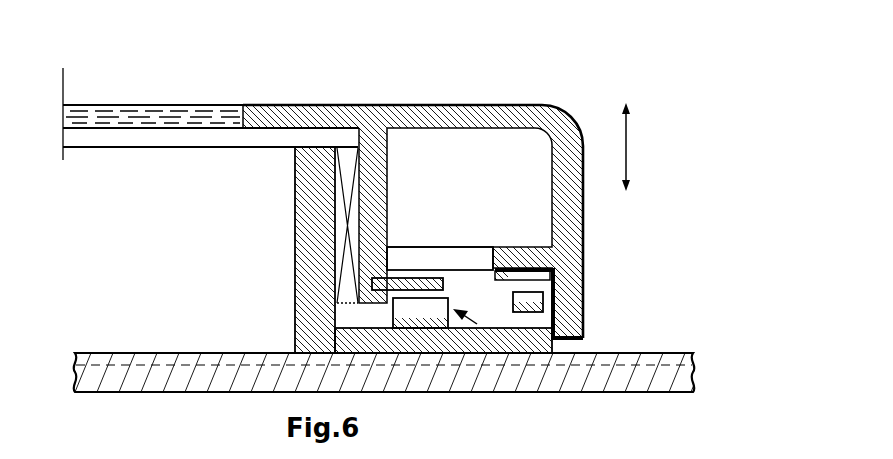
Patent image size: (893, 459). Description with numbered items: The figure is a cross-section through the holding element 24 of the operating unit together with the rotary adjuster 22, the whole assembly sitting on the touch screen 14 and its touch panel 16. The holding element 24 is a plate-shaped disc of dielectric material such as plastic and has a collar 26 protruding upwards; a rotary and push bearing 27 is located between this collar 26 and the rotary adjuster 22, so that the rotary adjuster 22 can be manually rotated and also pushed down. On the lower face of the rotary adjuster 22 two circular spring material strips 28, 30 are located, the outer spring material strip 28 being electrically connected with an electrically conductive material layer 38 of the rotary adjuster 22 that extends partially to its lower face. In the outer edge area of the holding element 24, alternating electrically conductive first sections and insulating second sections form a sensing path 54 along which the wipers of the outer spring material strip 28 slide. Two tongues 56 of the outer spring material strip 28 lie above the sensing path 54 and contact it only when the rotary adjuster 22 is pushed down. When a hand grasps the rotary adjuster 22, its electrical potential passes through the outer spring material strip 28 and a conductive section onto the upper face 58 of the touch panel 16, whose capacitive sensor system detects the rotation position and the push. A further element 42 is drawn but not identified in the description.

The touch screen 14 is at (632, 377).
The touch panel 16 is at (157, 352).
The rotary adjuster 22 is at (525, 104).
The holding element 24 is at (388, 352).
The collar 26 is at (303, 197).
The rotary and push bearing 27 is at (347, 175).
The outer spring material strip 28 is at (553, 277).
The spring material strip 30 is at (415, 278).
The electrically conductive material layer 38 is at (583, 219).
The signal path arrow 42 is at (477, 324).
The sensing path 54 is at (523, 314).
The tongues 56 is at (583, 311).
The upper face 58 is at (662, 355).